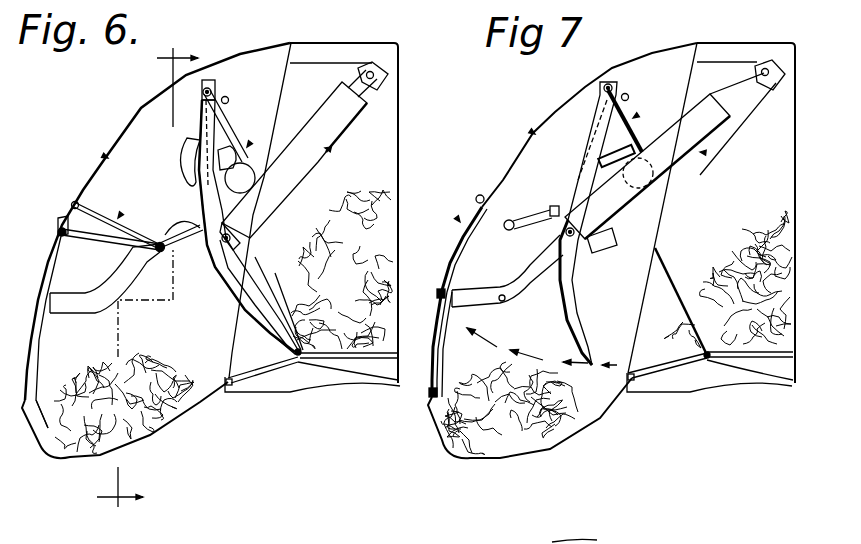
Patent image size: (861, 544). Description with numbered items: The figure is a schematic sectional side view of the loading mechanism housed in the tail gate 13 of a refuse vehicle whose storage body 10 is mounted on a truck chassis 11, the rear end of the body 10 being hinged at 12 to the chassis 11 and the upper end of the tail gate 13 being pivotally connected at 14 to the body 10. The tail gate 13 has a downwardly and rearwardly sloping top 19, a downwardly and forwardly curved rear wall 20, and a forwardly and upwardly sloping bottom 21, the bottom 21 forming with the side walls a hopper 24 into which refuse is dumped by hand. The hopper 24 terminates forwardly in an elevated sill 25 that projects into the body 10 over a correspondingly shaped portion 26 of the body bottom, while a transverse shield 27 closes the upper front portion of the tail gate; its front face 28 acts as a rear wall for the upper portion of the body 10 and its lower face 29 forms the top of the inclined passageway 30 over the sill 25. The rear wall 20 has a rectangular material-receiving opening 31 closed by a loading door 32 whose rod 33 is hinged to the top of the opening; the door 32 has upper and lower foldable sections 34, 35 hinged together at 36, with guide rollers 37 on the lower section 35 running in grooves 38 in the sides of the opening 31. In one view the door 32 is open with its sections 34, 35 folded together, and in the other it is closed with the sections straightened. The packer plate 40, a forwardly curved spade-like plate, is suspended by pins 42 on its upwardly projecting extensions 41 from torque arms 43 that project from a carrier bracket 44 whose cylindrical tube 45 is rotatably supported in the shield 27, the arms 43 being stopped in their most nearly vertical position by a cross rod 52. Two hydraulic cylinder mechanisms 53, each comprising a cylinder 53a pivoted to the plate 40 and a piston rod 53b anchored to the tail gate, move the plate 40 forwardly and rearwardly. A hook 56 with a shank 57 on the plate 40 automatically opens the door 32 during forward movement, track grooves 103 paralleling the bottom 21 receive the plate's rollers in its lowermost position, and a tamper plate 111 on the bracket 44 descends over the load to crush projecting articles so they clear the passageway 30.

In FIG. 6, the storage body 10 is at (380, 43).
In FIG. 7, the storage body 10 is at (760, 43).
In FIG. 6, the truck chassis 11 is at (299, 35).
In FIG. 7, the truck chassis 11 is at (709, 31).
In FIG. 6, the hinge 12 is at (226, 393).
In FIG. 7, the hinge 12 is at (628, 393).
In FIG. 6, the tail gate 13 is at (108, 158).
In FIG. 7, the tail gate 13 is at (535, 134).
In FIG. 6, the pivotal connection 14 is at (184, 45).
In FIG. 6, the top 19 is at (247, 56).
In FIG. 7, the top 19 is at (628, 58).
In FIG. 6, the rear wall 20 is at (47, 275).
In FIG. 7, the rear wall 20 is at (443, 437).
In FIG. 6, the bottom 21 is at (173, 428).
In FIG. 7, the bottom 21 is at (563, 430).
In FIG. 6, the hopper 24 is at (82, 462).
In FIG. 7, the hopper 24 is at (497, 457).
In FIG. 6, the sill 25 is at (258, 363).
In FIG. 7, the sill 25 is at (652, 348).
In FIG. 6, the portion of the bottom of the body 26 is at (262, 392).
In FIG. 7, the portion of the bottom of the body 26 is at (662, 392).
In FIG. 6, the shield 27 is at (318, 63).
In FIG. 7, the shield 27 is at (717, 62).
In FIG. 6, the front face 28 is at (348, 130).
In FIG. 7, the front face 28 is at (750, 124).
In FIG. 6, the lower face 29 is at (305, 178).
In FIG. 7, the lower face 29 is at (700, 178).
In FIG. 6, the passageway 30 is at (336, 269).
In FIG. 7, the passageway 30 is at (728, 279).
In FIG. 6, the material-receiving opening 31 is at (50, 277).
In FIG. 7, the material-receiving opening 31 is at (465, 260).
In FIG. 6, the loading door 32 is at (118, 218).
In FIG. 7, the loading door 32 is at (460, 222).
In FIG. 6, the rod 33 is at (75, 205).
In FIG. 7, the rod 33 is at (477, 195).
In FIG. 6, the upper foldable section 34 is at (97, 209).
In FIG. 7, the upper foldable section 34 is at (453, 248).
In FIG. 6, the lower foldable section 35 is at (100, 242).
In FIG. 7, the lower foldable section 35 is at (443, 356).
In FIG. 6, the hinge 36 is at (160, 253).
In FIG. 7, the hinge 36 is at (438, 293).
In FIG. 6, the guide rollers 37 is at (60, 228).
In FIG. 7, the guide rollers 37 is at (428, 392).
In FIG. 6, the grooves 38 is at (28, 333).
In FIG. 7, the grooves 38 is at (437, 320).
In FIG. 6, the packer plate 40 is at (234, 291).
In FIG. 7, the packer plate 40 is at (566, 302).
In FIG. 6, the upwardly projecting extensions 41 is at (226, 128).
In FIG. 7, the upwardly projecting extensions 41 is at (597, 120).
In FIG. 6, the pins 42 is at (208, 86).
In FIG. 7, the pins 42 is at (608, 82).
In FIG. 6, the torque arms 43 is at (228, 104).
In FIG. 7, the torque arms 43 is at (630, 98).
In FIG. 6, the carrier bracket 44 is at (247, 147).
In FIG. 7, the carrier bracket 44 is at (633, 118).
In FIG. 6, the cylindrical tube 45 is at (270, 153).
In FIG. 7, the cylindrical tube 45 is at (633, 207).
In FIG. 6, the cross rod 52 is at (227, 97).
In FIG. 7, the cross rod 52 is at (627, 94).
In FIG. 6, the hydraulic cylinder mechanisms 53 is at (325, 148).
In FIG. 7, the hydraulic cylinder mechanisms 53 is at (712, 168).
In FIG. 6, the cylinders 53a is at (324, 104).
In FIG. 7, the cylinders 53a is at (700, 152).
In FIG. 6, the piston rods 53b is at (365, 86).
In FIG. 7, the piston rods 53b is at (747, 103).
In FIG. 7, the hook 56 is at (511, 220).
In FIG. 6, the shank 57 is at (175, 222).
In FIG. 7, the shank 57 is at (547, 206).
In FIG. 6, the track grooves 103 is at (129, 303).
In FIG. 7, the track grooves 103 is at (502, 301).
In FIG. 6, the tamper plate 111 is at (180, 150).
In FIG. 7, the tamper plate 111 is at (596, 165).